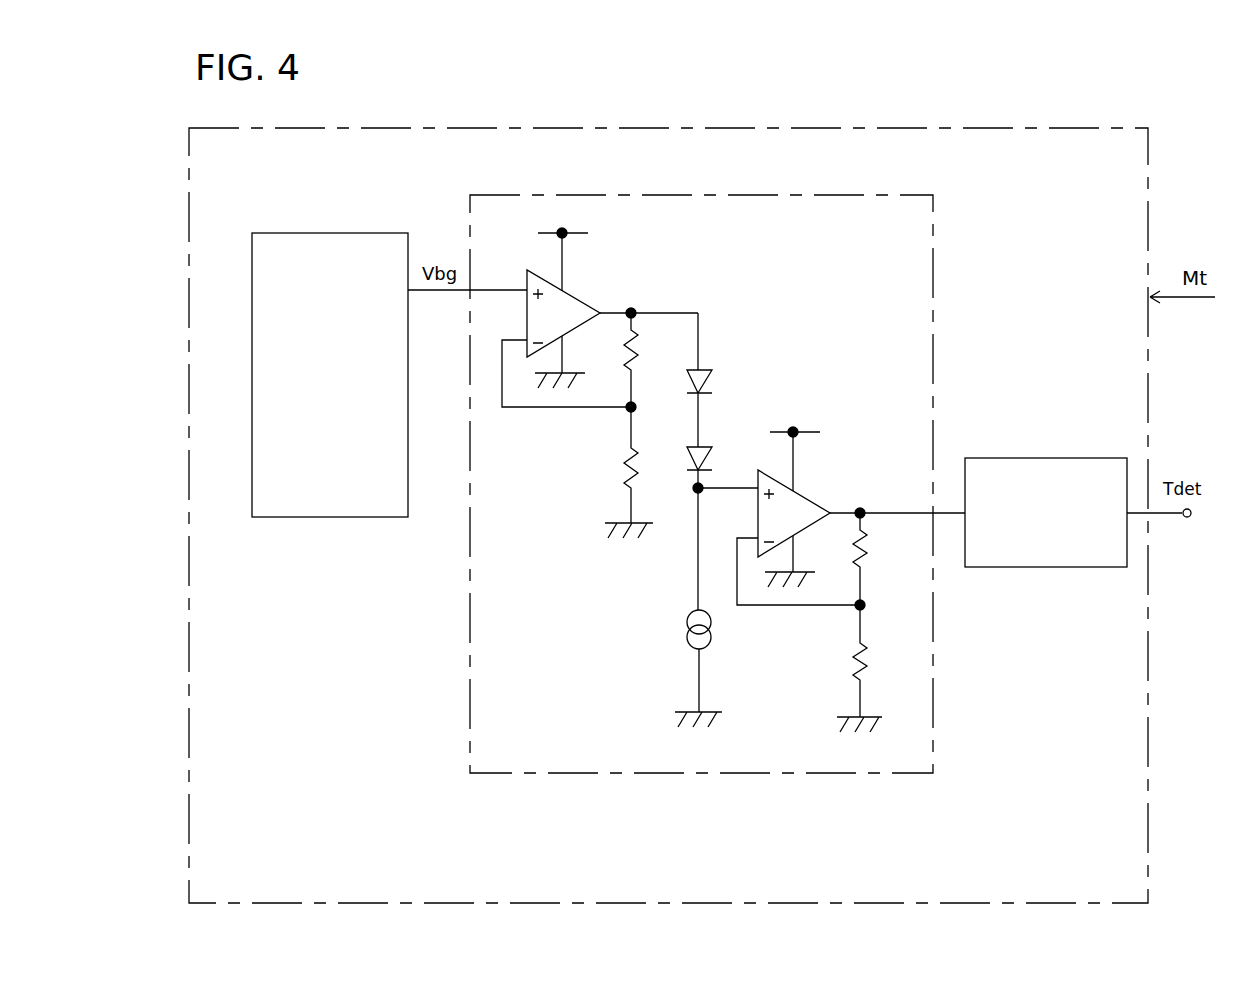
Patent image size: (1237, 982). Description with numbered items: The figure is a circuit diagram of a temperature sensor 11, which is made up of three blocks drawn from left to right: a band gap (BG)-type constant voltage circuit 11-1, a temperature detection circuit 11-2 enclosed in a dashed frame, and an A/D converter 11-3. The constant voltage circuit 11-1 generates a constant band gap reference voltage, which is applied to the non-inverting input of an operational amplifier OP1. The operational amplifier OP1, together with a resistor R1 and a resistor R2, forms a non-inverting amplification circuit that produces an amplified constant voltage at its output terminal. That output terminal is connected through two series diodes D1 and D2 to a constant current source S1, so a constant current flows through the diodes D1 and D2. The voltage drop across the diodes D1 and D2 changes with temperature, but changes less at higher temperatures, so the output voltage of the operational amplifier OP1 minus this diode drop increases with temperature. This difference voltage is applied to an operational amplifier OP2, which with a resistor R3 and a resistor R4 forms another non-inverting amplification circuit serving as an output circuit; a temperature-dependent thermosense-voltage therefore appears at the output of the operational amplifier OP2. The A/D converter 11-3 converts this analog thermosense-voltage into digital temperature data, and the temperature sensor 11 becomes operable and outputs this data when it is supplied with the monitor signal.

The temperature sensor 11 is at (982, 128).
The band gap (BG)-type constant voltage circuit 11-1 is at (360, 517).
The temperature detection circuit 11-2 is at (612, 773).
The A/D converter 11-3 is at (1067, 567).
The operational amplifier OP1 is at (583, 300).
The operational amplifier OP2 is at (812, 500).
The resistor R1 is at (649, 360).
The resistor R2 is at (639, 472).
The resistor R3 is at (878, 559).
The resistor R4 is at (870, 668).
The diode D1 is at (714, 380).
The diode D2 is at (714, 467).
The constant current source S1 is at (708, 607).